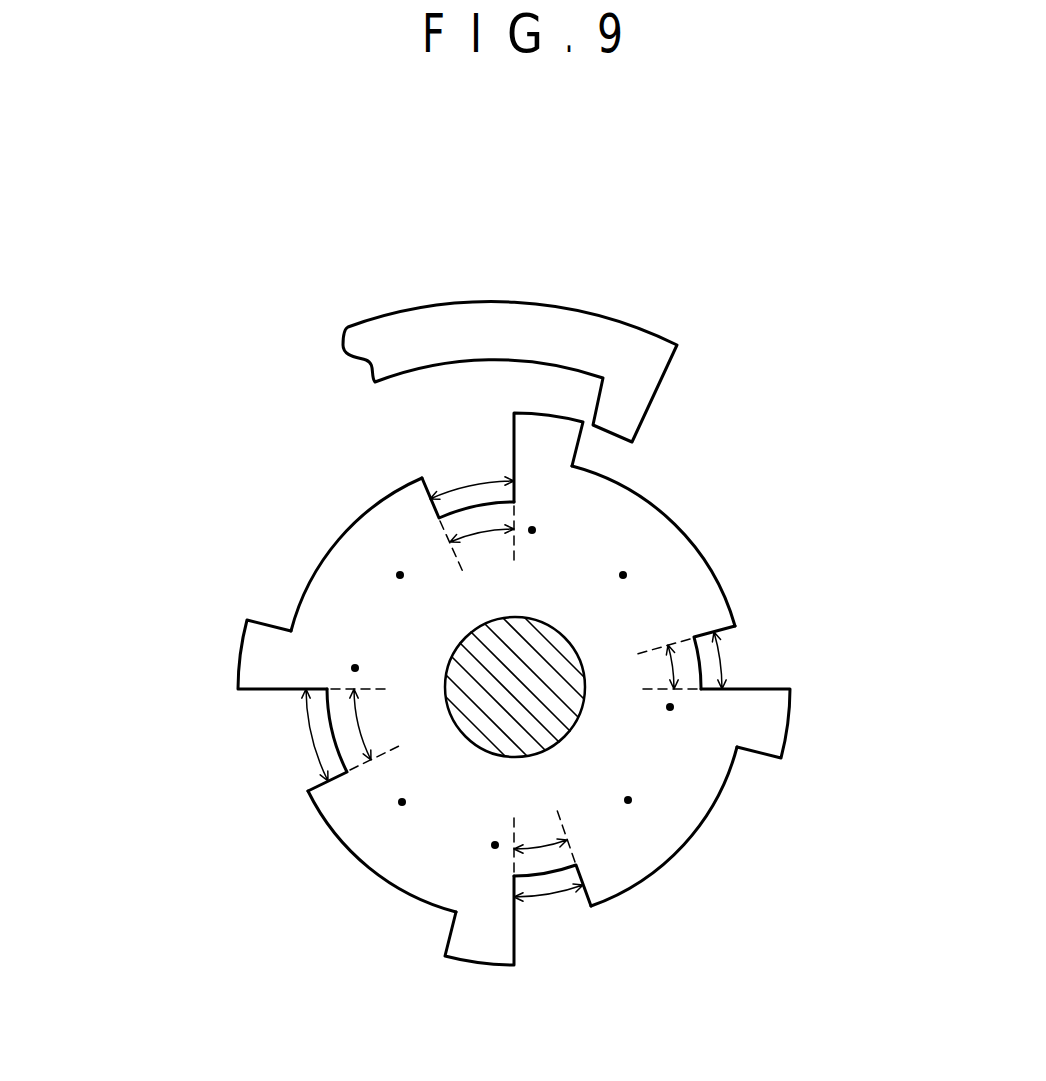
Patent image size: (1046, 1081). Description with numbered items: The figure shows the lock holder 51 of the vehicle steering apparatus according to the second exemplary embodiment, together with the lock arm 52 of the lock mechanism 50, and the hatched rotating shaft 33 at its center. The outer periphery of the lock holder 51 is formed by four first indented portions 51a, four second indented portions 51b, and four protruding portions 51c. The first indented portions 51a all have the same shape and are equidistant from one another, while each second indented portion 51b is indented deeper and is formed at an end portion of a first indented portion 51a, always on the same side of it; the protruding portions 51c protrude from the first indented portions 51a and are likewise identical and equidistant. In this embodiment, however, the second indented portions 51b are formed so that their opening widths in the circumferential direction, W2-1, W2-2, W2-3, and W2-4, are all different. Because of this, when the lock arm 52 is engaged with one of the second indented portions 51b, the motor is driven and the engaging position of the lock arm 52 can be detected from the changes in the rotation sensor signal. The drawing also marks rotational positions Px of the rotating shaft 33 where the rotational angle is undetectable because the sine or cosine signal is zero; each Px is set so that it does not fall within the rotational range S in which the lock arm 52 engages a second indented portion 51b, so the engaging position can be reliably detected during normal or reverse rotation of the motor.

The lock mechanism 50 is at (753, 272).
The lock holder 51 is at (542, 721).
The first indented portion 51a is at (722, 584).
The second indented portion 51b is at (472, 503).
The protruding portion 51c is at (790, 725).
The lock arm 52 is at (532, 320).
The rotating shaft 33 is at (567, 733).
The opening width W2-1 is at (722, 661).
The opening width W2-2 is at (577, 890).
The opening width W2-3 is at (318, 755).
The opening width W2-4 is at (488, 480).
The rotational range S is at (480, 533).
The rotational position Px is at (400, 575).